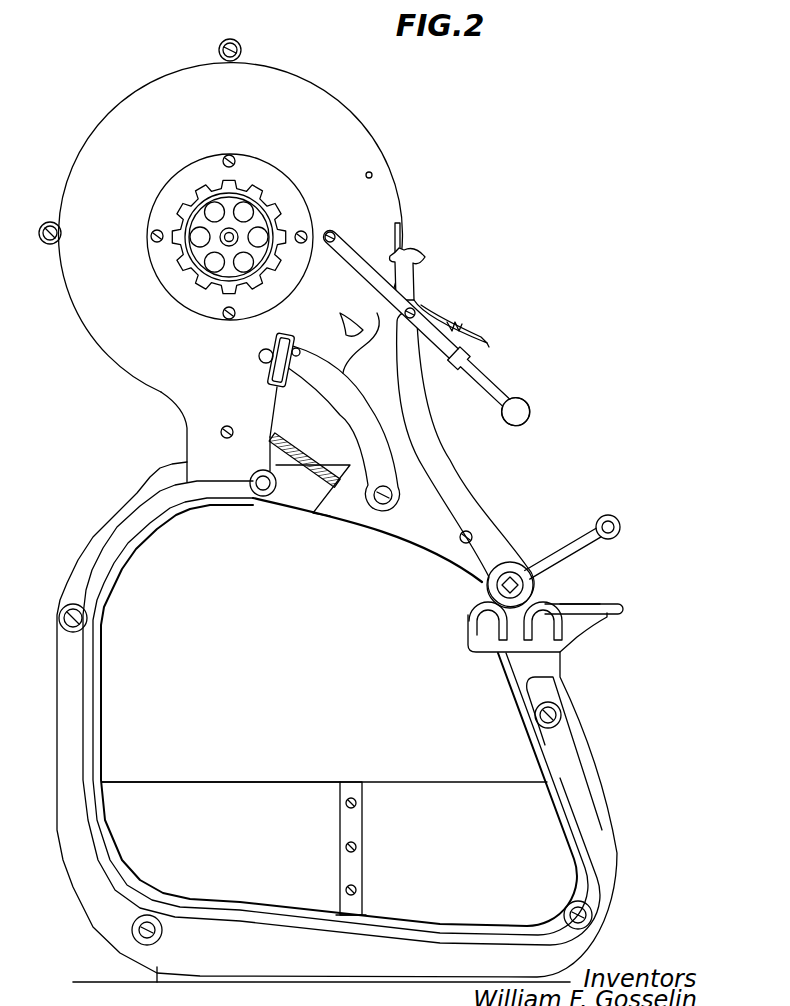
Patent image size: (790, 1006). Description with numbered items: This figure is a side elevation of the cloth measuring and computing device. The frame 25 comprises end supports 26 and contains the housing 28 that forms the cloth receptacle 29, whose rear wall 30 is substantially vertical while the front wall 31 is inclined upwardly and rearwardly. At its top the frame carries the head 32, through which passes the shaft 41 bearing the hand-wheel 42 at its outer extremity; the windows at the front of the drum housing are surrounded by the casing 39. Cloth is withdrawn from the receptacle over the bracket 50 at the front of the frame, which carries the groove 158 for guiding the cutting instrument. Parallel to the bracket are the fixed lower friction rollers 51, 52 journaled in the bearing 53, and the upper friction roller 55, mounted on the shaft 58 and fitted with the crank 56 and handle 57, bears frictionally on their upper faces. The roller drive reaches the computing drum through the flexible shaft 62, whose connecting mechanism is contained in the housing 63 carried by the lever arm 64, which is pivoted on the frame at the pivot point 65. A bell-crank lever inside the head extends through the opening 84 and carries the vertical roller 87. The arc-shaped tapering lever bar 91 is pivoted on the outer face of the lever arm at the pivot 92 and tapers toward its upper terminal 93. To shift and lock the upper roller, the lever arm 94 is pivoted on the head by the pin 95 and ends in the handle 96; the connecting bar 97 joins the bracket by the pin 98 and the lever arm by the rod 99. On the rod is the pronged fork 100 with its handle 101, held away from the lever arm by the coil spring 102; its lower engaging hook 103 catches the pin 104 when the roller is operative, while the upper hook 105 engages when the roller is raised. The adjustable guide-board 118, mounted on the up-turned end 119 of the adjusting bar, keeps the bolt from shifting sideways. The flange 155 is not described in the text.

The frame 25 is at (321, 986).
The end support 26 is at (337, 719).
The housing 28 is at (407, 923).
The cloth receptacle 29 is at (324, 761).
The rear wall 30 is at (102, 703).
The front wall 31 is at (536, 738).
The head 32 is at (220, 260).
The casing 39 is at (401, 233).
The shaft 41 is at (224, 240).
The hand-wheel 42 is at (173, 218).
The bracket 50 is at (614, 606).
The friction roller 51 is at (521, 623).
The friction roller 52 is at (471, 622).
The bearing 53 is at (490, 637).
The upper friction roller 55 is at (487, 591).
The crank 56 is at (580, 549).
The handle 57 is at (612, 520).
The shaft 58 is at (516, 573).
The flexible shaft 62 is at (297, 453).
The housing 63 is at (410, 534).
The lever arm 64 is at (322, 495).
The pivot point 65 is at (263, 491).
The opening 84 is at (275, 388).
The vertical roller 87 is at (299, 352).
The arc-shaped tapering lever bar 91 is at (366, 429).
The pivot 92 is at (374, 495).
The upper terminal 93 is at (261, 362).
The lever arm 94 is at (447, 356).
The pin 95 is at (332, 232).
The handle 96 is at (513, 398).
The connecting bar 97 is at (428, 465).
The pin 98 is at (470, 533).
The rod 99 is at (428, 301).
The pronged fork 100 is at (366, 175).
The handle 101 is at (468, 327).
The coil spring 102 is at (489, 347).
The lower engaging hook 103 is at (351, 334).
The pin 104 is at (374, 345).
The upper hook 105 is at (408, 250).
The guide-board 118 is at (294, 804).
The up-turned end 119 is at (363, 832).
The flange 155 is at (263, 173).
The groove 158 is at (582, 604).